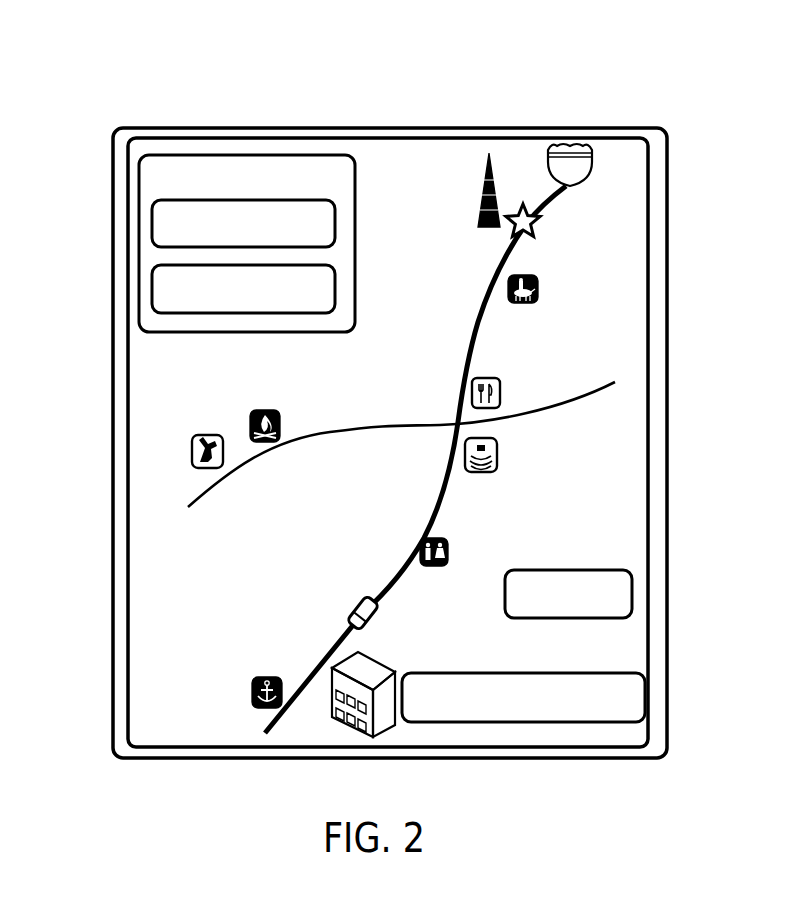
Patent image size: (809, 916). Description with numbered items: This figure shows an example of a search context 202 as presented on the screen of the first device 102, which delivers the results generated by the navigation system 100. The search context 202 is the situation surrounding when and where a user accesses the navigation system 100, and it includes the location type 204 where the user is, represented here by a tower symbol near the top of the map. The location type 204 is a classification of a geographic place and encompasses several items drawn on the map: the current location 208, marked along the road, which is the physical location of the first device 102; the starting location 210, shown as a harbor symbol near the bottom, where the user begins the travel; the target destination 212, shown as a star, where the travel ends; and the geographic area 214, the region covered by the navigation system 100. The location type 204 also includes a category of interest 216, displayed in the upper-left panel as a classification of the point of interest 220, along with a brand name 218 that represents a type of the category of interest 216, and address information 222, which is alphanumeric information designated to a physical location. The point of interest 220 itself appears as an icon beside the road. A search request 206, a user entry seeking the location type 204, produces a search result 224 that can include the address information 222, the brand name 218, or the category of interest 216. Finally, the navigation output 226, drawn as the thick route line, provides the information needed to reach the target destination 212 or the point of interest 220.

The navigation system 100 is at (208, 96).
The first device 102 is at (592, 115).
The search context 202 is at (397, 118).
The location type 204 is at (498, 195).
The search request 206 is at (618, 590).
The current location 208 is at (355, 605).
The starting location 210 is at (253, 695).
The target destination 212 is at (541, 222).
The geographic area 214 is at (157, 387).
The category of interest 216 is at (158, 182).
The brand name 218 is at (158, 230).
The point of interest 220 is at (527, 275).
The address information 222 is at (158, 292).
The search result 224 is at (628, 687).
The navigation output 226 is at (472, 343).